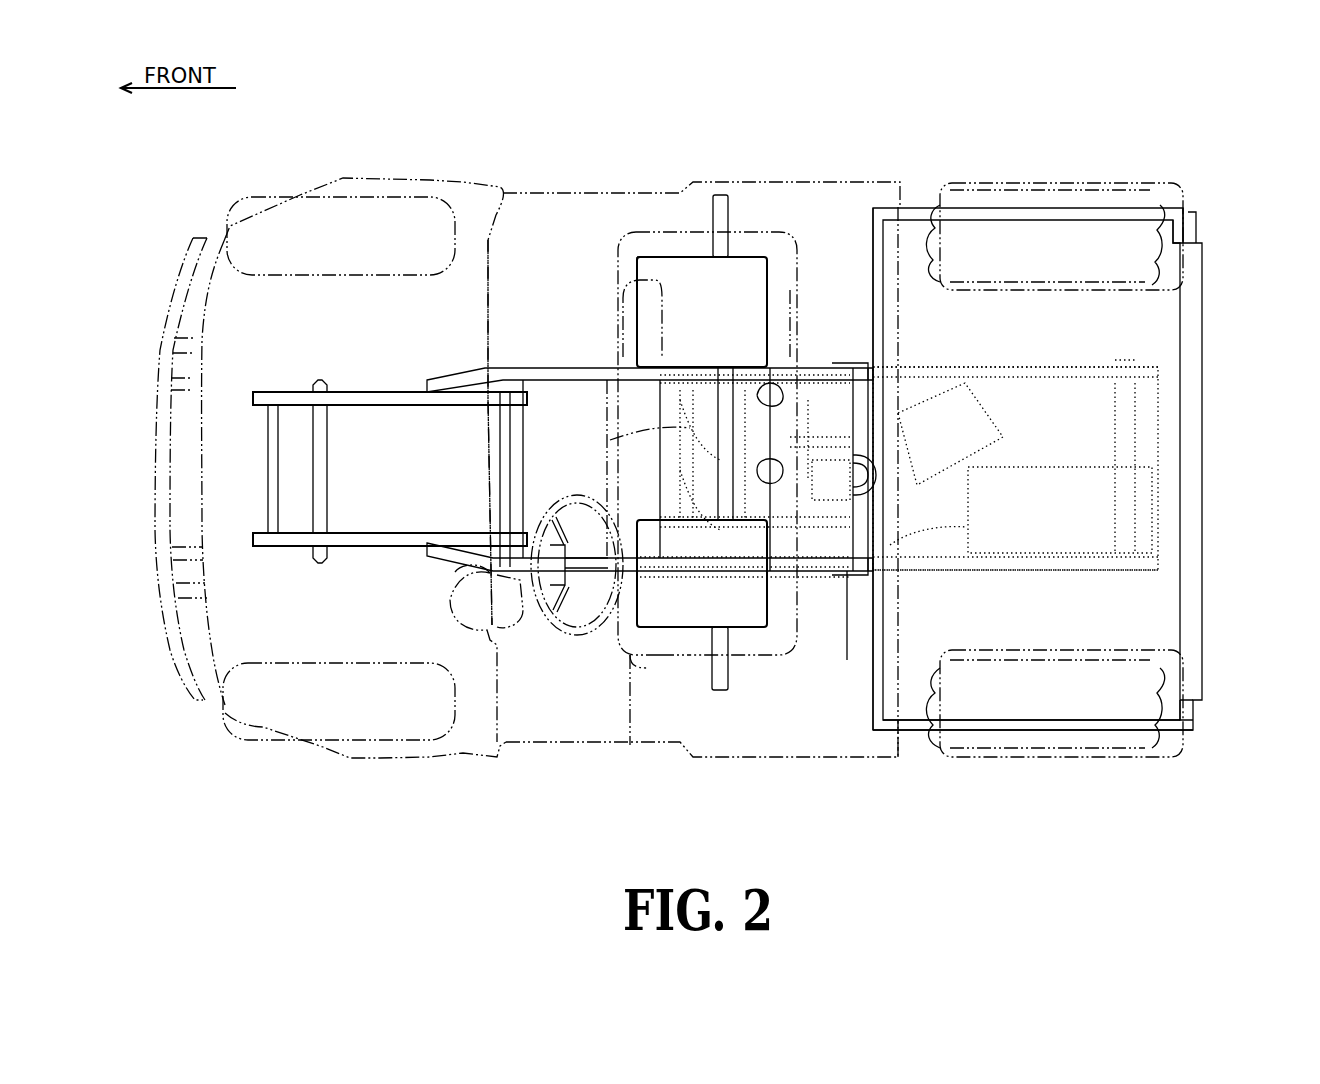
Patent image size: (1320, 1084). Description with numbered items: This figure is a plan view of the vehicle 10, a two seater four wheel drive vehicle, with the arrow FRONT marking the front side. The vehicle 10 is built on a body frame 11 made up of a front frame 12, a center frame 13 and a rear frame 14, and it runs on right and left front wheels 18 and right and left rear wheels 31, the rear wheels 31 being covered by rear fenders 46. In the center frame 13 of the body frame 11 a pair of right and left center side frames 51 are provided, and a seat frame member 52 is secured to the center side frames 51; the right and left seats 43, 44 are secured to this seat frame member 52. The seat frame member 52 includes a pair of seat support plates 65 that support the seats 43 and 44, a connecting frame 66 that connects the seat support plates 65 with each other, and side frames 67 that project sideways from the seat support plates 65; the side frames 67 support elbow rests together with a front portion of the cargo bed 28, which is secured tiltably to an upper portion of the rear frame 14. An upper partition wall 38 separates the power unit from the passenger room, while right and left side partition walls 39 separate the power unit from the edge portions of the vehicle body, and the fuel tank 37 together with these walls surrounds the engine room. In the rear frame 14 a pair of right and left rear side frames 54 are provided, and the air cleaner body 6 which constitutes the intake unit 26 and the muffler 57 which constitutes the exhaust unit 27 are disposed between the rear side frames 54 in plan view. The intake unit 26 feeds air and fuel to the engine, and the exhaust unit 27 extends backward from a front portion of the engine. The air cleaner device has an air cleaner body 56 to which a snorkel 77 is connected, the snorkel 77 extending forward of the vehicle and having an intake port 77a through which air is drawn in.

The vehicle 10 is at (180, 206).
The front wheels 18 is at (383, 178).
The front frame 12 is at (356, 565).
The body frame 11 is at (548, 350).
The center frame 13 is at (590, 346).
The center side frames 51 is at (605, 370).
The seat 44 is at (673, 232).
The seat frame member 52 is at (665, 241).
The side frames 67 is at (727, 217).
The seat support plates 65 is at (743, 273).
The side partition walls 39 is at (805, 367).
The snorkel 77 is at (810, 410).
The intake port 77a is at (680, 445).
The connecting frame 66 is at (680, 457).
The fuel tank 37 is at (640, 670).
The seat 43 is at (665, 660).
The upper partition wall 38 is at (868, 413).
The intake unit 26 is at (848, 393).
The air cleaner body 6 is at (860, 425).
The cargo bed 28 is at (995, 747).
The exhaust unit 27 is at (848, 552).
The rear wheels 31 is at (992, 187).
The rear fenders 46 is at (1120, 187).
The rear frame 14 is at (1028, 352).
The rear side frames 54 is at (1107, 370).
The air cleaner body 56 is at (992, 410).
The muffler 57 is at (1152, 522).